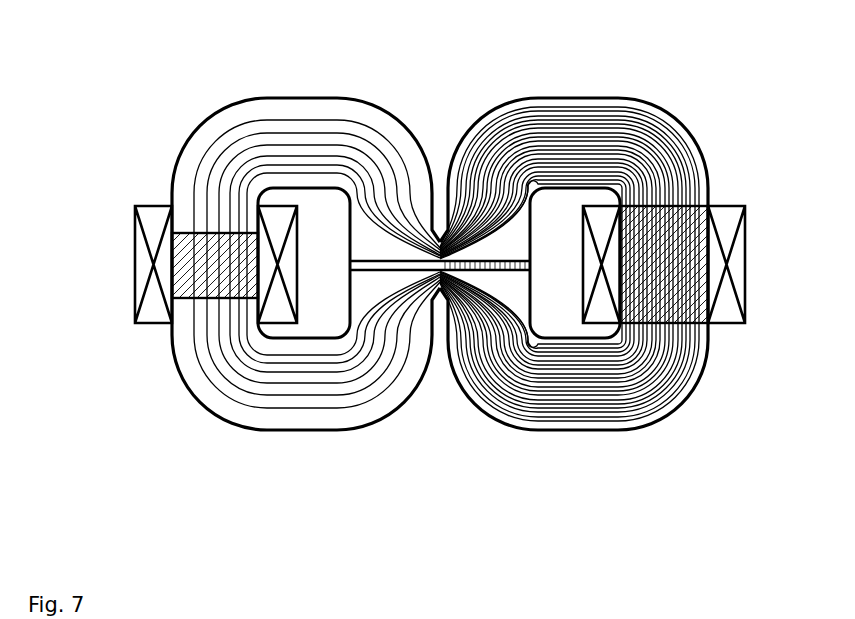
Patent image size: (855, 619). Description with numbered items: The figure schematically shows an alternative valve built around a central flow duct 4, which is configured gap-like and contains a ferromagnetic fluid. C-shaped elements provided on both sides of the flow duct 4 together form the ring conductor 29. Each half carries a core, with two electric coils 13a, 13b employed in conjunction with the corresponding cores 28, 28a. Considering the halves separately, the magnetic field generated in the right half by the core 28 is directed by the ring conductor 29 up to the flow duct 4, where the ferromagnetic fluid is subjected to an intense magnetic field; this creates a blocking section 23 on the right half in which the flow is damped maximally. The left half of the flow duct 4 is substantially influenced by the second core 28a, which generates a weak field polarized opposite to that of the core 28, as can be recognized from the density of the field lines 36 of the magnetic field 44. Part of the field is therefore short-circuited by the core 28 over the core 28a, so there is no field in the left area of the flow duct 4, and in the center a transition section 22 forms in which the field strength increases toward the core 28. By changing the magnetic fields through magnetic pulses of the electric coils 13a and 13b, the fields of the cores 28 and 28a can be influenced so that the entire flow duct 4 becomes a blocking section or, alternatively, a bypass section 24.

The field lines 36 is at (275, 115).
The ring conductor 29 is at (560, 137).
The magnetic field 44 is at (625, 137).
The transition section 22 is at (437, 232).
The bypass section 24 is at (367, 275).
The blocking section 23 is at (487, 290).
The flow duct 4 is at (437, 290).
The core 28 is at (688, 197).
The second core 28a is at (185, 288).
The electric coil 13a is at (727, 218).
The electric coil 13b is at (121, 227).